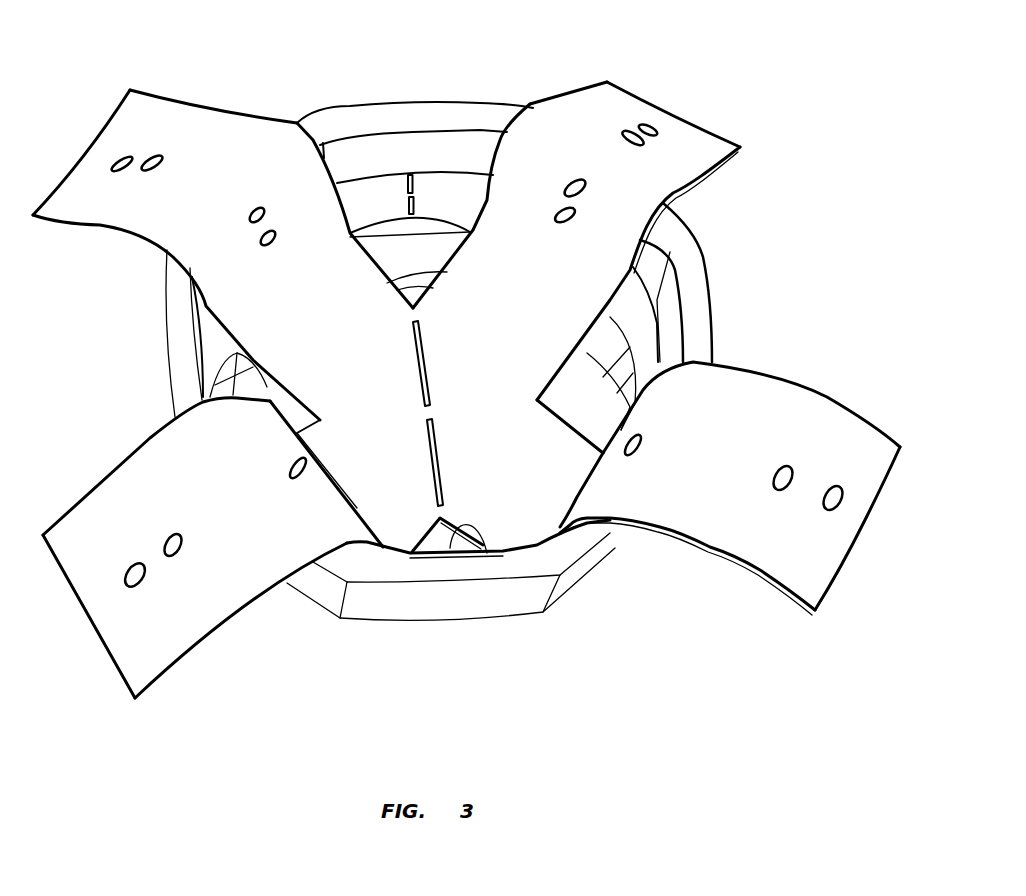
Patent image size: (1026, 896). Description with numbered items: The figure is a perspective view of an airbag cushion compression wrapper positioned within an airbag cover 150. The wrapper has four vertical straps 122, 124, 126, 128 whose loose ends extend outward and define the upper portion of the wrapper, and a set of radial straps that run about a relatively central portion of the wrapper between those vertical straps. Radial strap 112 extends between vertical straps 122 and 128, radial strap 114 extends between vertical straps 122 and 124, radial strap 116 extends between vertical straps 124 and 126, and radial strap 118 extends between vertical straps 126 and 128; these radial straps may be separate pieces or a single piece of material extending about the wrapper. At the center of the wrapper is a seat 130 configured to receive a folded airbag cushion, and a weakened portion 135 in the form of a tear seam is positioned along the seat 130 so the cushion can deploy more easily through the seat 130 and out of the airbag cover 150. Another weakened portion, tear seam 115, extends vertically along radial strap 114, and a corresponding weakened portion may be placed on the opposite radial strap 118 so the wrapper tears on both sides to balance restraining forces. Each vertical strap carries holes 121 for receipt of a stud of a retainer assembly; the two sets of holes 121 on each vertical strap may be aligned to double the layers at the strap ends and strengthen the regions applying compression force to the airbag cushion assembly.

The radial strap 112 is at (640, 333).
The radial strap 114 is at (463, 187).
The tear seam 115 is at (407, 182).
The radial strap 116 is at (213, 362).
The radial strap 118 is at (435, 548).
The apertures 121 is at (154, 150).
The vertical strap 122 is at (683, 165).
The vertical strap 124 is at (97, 203).
The vertical strap 126 is at (170, 627).
The vertical strap 128 is at (790, 548).
The seat 130 is at (477, 367).
The weakened portion 135 is at (440, 452).
The airbag cover 150 is at (434, 117).